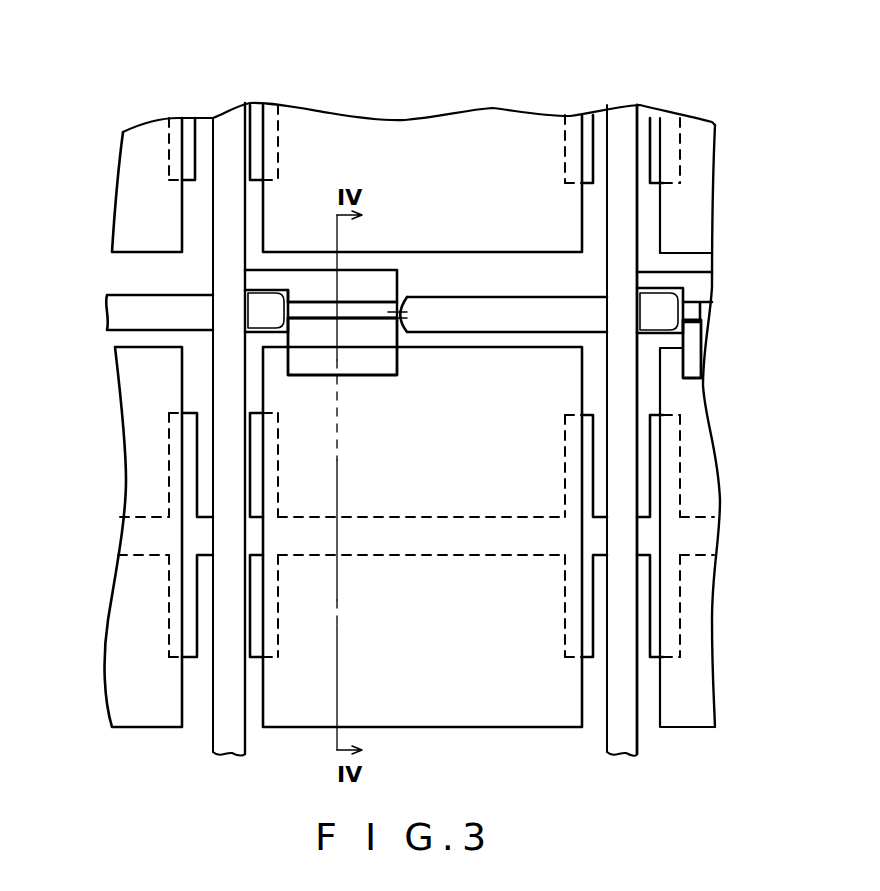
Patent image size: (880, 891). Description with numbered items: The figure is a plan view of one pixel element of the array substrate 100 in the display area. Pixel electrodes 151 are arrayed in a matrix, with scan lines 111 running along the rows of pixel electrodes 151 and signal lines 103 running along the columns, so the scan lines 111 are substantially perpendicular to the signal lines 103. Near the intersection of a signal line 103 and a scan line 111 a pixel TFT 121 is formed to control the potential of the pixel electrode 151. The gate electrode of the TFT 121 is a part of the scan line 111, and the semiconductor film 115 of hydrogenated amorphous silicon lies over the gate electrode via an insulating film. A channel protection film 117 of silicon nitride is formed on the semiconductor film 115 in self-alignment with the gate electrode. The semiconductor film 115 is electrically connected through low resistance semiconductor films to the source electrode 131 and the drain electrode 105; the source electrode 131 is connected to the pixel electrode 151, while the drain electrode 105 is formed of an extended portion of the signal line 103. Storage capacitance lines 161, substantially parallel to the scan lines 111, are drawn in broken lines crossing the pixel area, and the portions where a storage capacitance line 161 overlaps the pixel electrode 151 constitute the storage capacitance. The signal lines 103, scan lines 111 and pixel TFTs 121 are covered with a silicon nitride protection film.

The array substrate 100 is at (673, 88).
The signal line 103 is at (231, 108).
The drain electrode 105 is at (380, 288).
The scan line 111 is at (106, 312).
The semiconductor film 115 is at (405, 305).
The channel protection film 117 is at (405, 322).
The pixel thin film transistor 121 is at (363, 297).
The source electrode 131 is at (380, 365).
The pixel electrode 151 is at (500, 712).
The storage capacitance line 161 is at (700, 535).